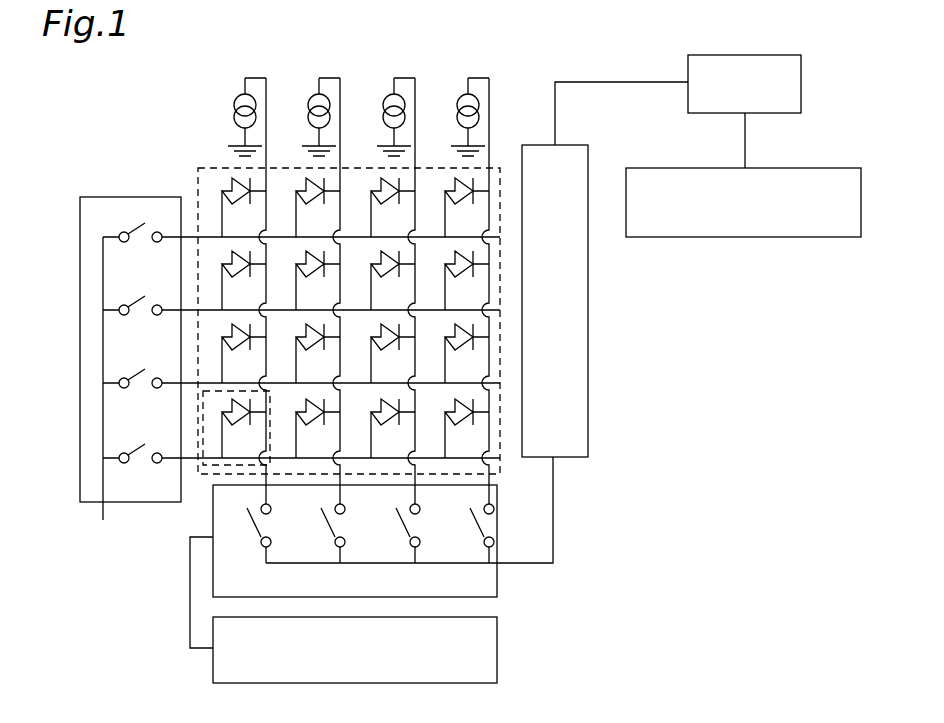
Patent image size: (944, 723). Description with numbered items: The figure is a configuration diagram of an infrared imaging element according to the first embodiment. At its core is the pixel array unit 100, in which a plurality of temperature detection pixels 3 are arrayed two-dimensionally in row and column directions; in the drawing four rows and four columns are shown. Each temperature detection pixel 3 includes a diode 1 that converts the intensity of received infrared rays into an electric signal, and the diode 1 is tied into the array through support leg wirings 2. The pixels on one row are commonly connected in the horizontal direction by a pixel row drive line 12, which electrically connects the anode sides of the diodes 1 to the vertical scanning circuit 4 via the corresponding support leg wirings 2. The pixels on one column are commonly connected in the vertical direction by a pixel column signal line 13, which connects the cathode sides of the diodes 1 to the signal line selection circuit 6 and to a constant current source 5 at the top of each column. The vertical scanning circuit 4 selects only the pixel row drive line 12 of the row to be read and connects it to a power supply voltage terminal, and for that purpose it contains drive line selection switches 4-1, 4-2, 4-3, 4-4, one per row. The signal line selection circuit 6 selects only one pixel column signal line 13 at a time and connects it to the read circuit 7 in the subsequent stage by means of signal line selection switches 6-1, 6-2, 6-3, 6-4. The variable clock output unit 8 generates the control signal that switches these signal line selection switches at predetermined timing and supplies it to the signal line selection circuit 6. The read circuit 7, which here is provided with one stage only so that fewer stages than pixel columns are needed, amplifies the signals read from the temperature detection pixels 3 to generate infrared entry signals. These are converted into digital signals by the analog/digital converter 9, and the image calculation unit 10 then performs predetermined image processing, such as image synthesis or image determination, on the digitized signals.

The diode 1 is at (228, 183).
The support leg wiring 2 is at (218, 208).
The temperature detection pixel 3 is at (208, 478).
The vertical scanning circuit 4 is at (118, 197).
The drive line selection switch 4-1 is at (132, 470).
The drive line selection switch 4-2 is at (132, 395).
The drive line selection switch 4-3 is at (132, 322).
The drive line selection switch 4-4 is at (132, 249).
The constant current source 5 is at (458, 103).
The signal line selection circuit 6 is at (500, 590).
The signal line selection switch 6-1 is at (251, 548).
The signal line selection switch 6-2 is at (325, 548).
The signal line selection switch 6-3 is at (400, 548).
The signal line selection switch 6-4 is at (474, 548).
The read circuit 7 is at (588, 313).
The variable clock output unit 8 is at (498, 648).
The analog/digital converter 9 is at (745, 55).
The image calculation unit 10 is at (743, 237).
The pixel row drive line 12 is at (193, 198).
The pixel column signal line 13 is at (492, 88).
The pixel array unit 100 is at (500, 470).